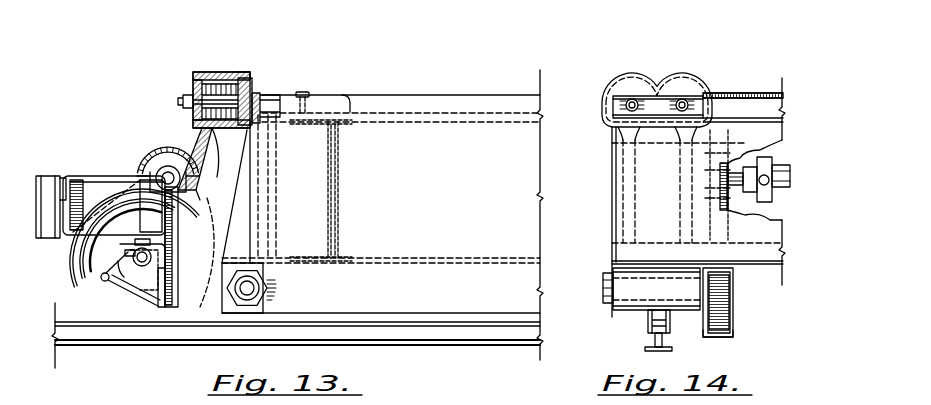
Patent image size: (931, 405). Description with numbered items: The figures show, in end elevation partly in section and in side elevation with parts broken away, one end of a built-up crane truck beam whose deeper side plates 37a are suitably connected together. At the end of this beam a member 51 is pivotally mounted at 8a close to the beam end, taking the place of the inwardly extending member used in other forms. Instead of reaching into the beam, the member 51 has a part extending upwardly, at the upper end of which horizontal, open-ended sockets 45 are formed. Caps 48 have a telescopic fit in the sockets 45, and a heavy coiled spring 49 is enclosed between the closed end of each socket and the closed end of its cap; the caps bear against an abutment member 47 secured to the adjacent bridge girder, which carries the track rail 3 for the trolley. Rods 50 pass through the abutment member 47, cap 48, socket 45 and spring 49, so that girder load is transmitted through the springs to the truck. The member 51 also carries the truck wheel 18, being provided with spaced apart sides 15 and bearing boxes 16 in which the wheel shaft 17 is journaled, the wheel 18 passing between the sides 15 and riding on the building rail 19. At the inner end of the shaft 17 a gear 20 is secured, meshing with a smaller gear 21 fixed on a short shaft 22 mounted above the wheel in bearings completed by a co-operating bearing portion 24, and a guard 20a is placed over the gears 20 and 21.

In FIG. 13, the track rail 3 is at (309, 95).
In FIG. 13, the pivot 8a is at (268, 282).
In FIG. 14, the pivot 8a is at (607, 300).
In FIG. 13, the spaced apart vertical sides 15 is at (157, 212).
In FIG. 13, the boxes 16 is at (127, 275).
In FIG. 13, the shaft 17 is at (160, 251).
In FIG. 13, the truck wheel 18 is at (126, 312).
In FIG. 14, the truck wheel 18 is at (648, 320).
In FIG. 13, the tracks or rails 19 is at (188, 336).
In FIG. 14, the tracks or rails 19 is at (660, 352).
In FIG. 14, the gear 20 is at (733, 325).
In FIG. 13, the guard 20a is at (150, 152).
In FIG. 14, the guard 20a is at (725, 340).
In FIG. 13, the smaller gear 21 is at (168, 146).
In FIG. 13, the short shaft 22 is at (189, 247).
In FIG. 13, the co-operating bearing portion 24 is at (205, 166).
In FIG. 13, the deeper side plates 37a is at (540, 181).
In FIG. 14, the deeper side plates 37a is at (612, 215).
In FIG. 13, the sockets 45 is at (222, 74).
In FIG. 14, the sockets 45 is at (673, 96).
In FIG. 14, the abutment member 47 is at (697, 85).
In FIG. 13, the caps 48 is at (253, 90).
In FIG. 14, the caps 48 is at (631, 92).
In FIG. 13, the coiled spring 49 is at (192, 92).
In FIG. 13, the rods 50 is at (266, 100).
In FIG. 13, the member 51 is at (228, 203).